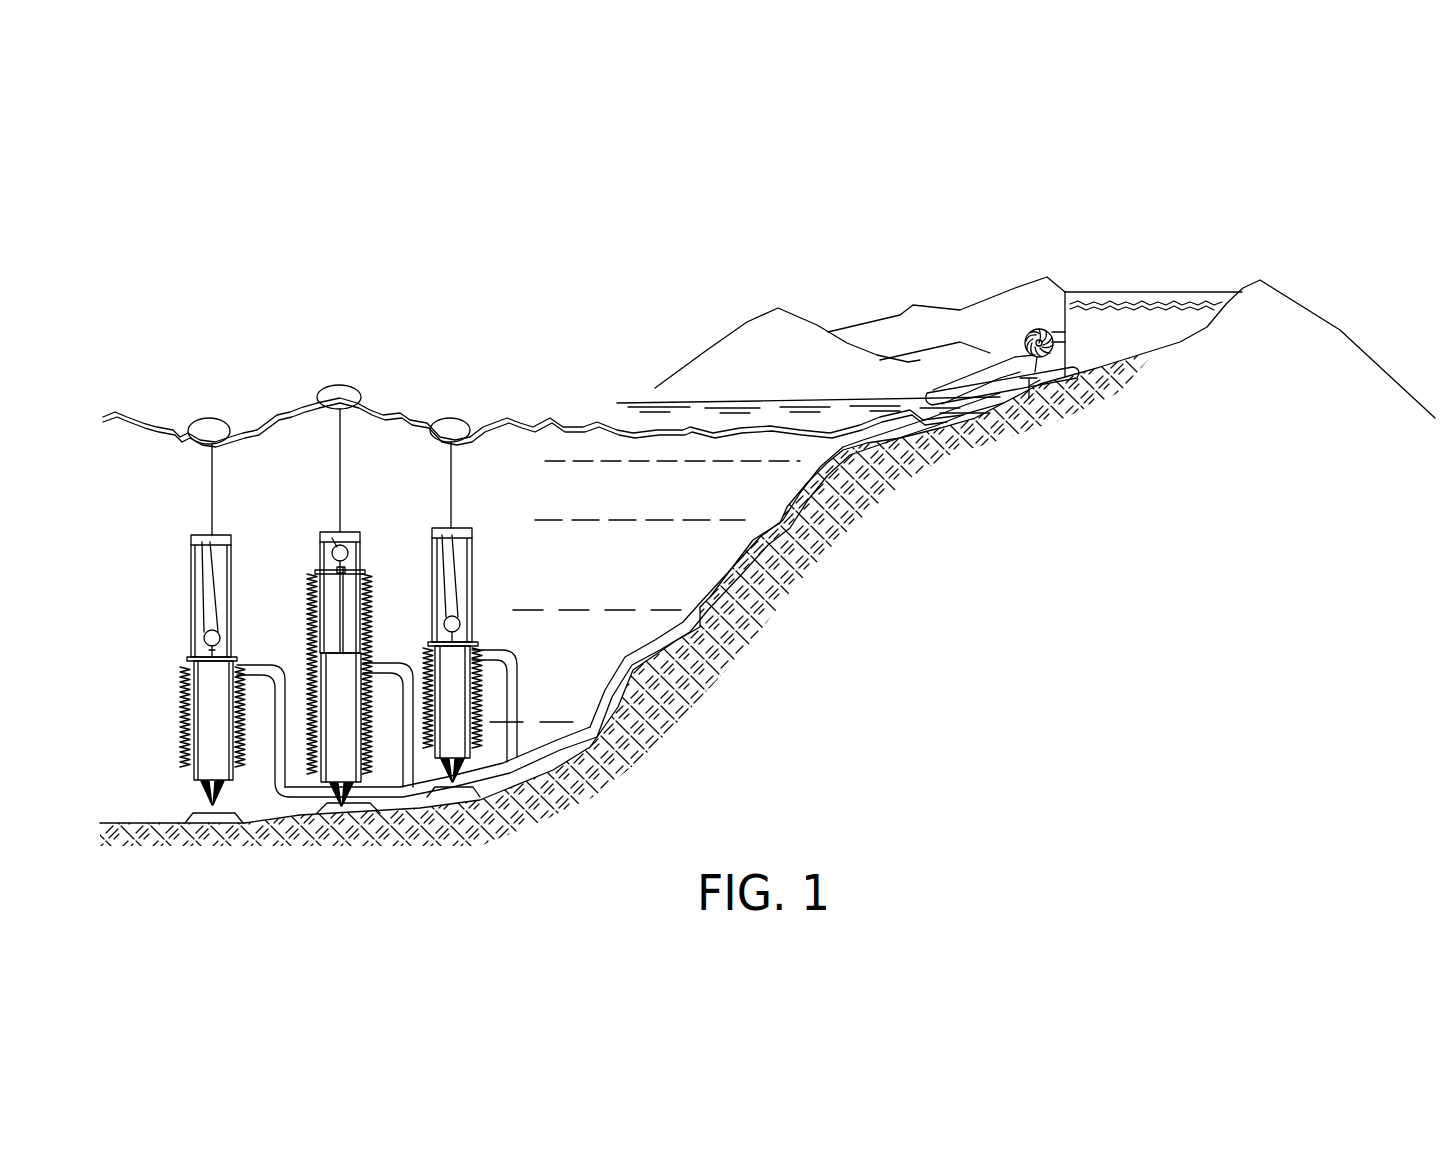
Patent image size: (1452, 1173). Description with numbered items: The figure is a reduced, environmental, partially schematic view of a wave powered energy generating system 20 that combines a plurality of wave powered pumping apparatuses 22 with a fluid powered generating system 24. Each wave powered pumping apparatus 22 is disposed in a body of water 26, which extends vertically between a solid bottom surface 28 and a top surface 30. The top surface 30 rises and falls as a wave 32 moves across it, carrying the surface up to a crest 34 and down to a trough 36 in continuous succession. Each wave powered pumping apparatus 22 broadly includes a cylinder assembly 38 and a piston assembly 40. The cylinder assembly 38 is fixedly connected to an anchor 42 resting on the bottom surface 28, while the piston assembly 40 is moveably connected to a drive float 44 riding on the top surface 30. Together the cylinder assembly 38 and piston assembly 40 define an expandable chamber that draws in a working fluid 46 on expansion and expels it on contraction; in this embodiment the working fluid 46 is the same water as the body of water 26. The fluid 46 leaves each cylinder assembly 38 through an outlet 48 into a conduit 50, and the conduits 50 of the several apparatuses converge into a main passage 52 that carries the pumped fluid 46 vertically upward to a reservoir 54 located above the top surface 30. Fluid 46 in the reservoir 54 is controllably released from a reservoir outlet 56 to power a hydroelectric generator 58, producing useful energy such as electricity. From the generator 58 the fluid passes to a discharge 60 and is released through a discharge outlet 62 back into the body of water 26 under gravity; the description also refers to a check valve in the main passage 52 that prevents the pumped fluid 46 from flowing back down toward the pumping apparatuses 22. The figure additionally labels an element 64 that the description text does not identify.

The wave powered energy generating system 20 is at (398, 258).
The wave powered pumping apparatus 22 is at (330, 652).
The fluid powered generating system 24 is at (1140, 262).
The body of water 26 is at (506, 452).
The bottom surface 28 is at (572, 800).
The top surface 30 is at (150, 422).
The wave 32 is at (286, 370).
The crest 34 is at (320, 430).
The trough 36 is at (190, 458).
The cylinder assembly 38 is at (205, 695).
The piston assembly 40 is at (356, 580).
The anchor 42 is at (212, 820).
The drive float 44 is at (215, 428).
The working fluid 46 is at (1148, 345).
The outlet 48 is at (237, 668).
The conduit 50 is at (285, 778).
The main passage 52 is at (690, 630).
The reservoir 54 is at (1175, 300).
The reservoir outlet 56 is at (1052, 330).
The hydroelectric generator 58 is at (1033, 356).
The discharge 60 is at (990, 365).
The discharge outlet 62 is at (926, 384).
The valve / return pipe 64 is at (1028, 392).